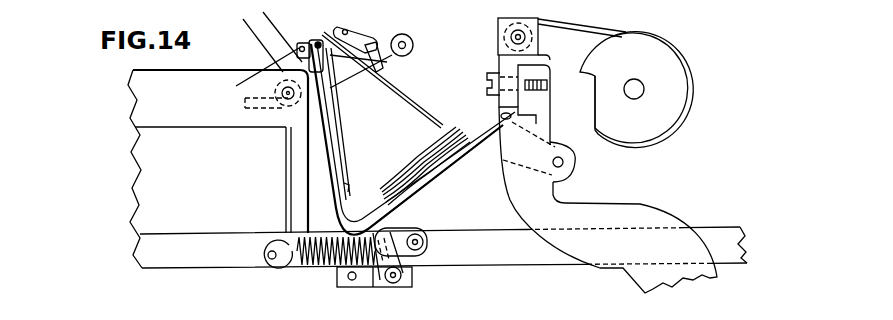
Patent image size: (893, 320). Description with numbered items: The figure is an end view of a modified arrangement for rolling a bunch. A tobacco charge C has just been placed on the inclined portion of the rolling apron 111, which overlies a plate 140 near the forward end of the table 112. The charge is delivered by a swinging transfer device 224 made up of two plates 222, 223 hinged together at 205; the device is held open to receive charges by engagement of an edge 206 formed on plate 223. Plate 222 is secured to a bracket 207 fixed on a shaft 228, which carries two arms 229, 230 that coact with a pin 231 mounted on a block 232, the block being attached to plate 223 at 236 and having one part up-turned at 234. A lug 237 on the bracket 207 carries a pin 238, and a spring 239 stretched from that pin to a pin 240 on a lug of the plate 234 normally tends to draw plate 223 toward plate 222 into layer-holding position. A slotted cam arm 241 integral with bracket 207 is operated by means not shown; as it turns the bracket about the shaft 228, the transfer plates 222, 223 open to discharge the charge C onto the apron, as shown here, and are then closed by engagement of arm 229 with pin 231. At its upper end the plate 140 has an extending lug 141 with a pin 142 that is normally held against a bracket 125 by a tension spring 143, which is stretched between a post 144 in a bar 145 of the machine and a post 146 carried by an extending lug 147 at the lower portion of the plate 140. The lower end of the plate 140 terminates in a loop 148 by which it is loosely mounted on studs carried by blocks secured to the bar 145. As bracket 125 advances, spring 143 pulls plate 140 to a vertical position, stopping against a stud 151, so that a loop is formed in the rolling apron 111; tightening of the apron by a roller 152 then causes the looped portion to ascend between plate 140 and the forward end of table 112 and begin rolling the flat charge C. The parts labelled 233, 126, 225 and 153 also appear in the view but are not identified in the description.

The table 112 is at (148, 162).
The rolling apron 111 is at (327, 165).
The bar 145 is at (503, 258).
The slotted cam arm 241 is at (262, 45).
The attachment point 236 is at (275, 92).
The link 233 is at (236, 86).
The arm 229 is at (245, 103).
The shaft 228 is at (258, 128).
The pin 240 is at (300, 43).
The up-turned part (plate) 234 is at (310, 40).
The hinge 205 is at (320, 42).
The swinging transfer device 224 is at (322, 134).
The plate 223 is at (345, 133).
The edge 206 is at (348, 185).
The plate 222 is at (436, 115).
The arm 230 is at (337, 98).
The pin 231 is at (347, 85).
The block 232 is at (334, 68).
The bracket 207 is at (410, 37).
The lug 237 is at (402, 31).
The pin 238 is at (360, 27).
The spring 239 is at (338, 24).
The charge C is at (397, 188).
The plate 140 is at (443, 164).
The post 144 is at (272, 260).
The tension spring 143 is at (320, 268).
The stud 151 is at (352, 282).
The loop 148 is at (405, 288).
The post 146 is at (423, 230).
The extending lug 147 is at (425, 257).
The hopper 126 is at (540, 48).
The bracket 225 is at (488, 77).
The extending lug 141 is at (557, 143).
The pin 142 is at (575, 163).
The bracket 125 is at (610, 203).
The roller 152 is at (668, 102).
The hub 153 is at (637, 86).